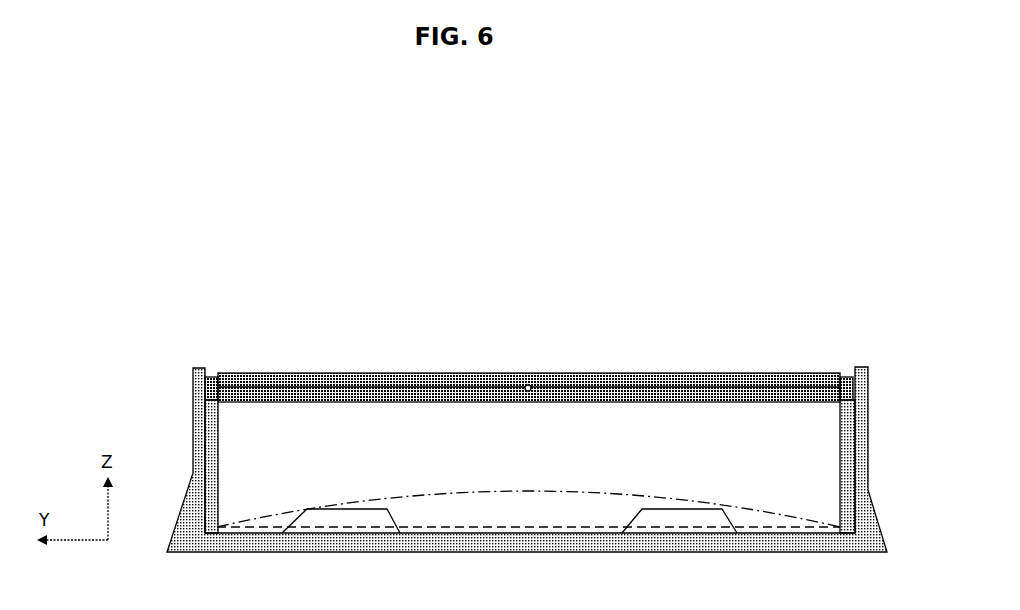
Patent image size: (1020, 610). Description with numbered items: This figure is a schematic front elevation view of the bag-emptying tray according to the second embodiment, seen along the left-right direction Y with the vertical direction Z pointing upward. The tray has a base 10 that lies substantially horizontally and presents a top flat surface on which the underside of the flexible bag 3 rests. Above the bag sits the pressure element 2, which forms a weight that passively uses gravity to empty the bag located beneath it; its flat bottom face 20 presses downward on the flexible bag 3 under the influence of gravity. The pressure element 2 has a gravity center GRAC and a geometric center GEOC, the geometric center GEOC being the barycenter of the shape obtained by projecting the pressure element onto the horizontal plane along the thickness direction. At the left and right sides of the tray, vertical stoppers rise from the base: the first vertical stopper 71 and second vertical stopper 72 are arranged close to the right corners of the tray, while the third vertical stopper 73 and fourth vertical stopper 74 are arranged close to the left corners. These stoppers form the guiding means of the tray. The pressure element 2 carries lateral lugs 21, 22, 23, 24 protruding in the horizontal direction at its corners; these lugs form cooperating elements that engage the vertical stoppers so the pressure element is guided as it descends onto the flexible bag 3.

The pressure element 2 is at (165, 412).
The flexible bag 3 is at (436, 497).
The base 10 is at (757, 530).
The flat bottom face 20 is at (620, 402).
The lateral lug 21 is at (801, 359).
The lateral lug 22 is at (846, 376).
The lateral lug 23 is at (255, 352).
The lateral lug 24 is at (209, 376).
The first vertical stopper 71 is at (894, 466).
The second vertical stopper 72 is at (852, 440).
The third vertical stopper 73 is at (254, 466).
The fourth vertical stopper 74 is at (212, 449).
The geometric center GEOC is at (573, 348).
The gravity center GRAC is at (528, 385).